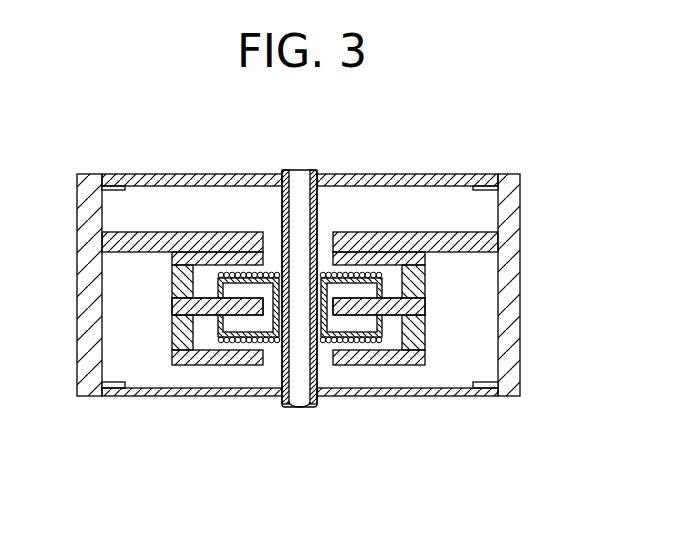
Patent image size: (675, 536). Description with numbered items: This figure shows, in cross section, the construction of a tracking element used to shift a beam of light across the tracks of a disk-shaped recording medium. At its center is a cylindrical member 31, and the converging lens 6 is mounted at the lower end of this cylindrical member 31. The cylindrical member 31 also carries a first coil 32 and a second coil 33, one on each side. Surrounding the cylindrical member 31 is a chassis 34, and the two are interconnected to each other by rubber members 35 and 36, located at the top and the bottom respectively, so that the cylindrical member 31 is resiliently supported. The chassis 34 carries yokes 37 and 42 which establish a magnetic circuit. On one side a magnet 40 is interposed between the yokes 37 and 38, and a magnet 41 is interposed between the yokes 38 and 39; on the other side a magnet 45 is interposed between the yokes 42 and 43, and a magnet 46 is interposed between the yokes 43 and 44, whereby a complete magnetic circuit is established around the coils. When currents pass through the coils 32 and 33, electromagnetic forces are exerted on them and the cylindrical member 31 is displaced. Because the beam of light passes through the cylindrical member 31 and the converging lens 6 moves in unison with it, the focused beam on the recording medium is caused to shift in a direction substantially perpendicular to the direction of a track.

The converging lens 6 is at (300, 408).
The cylindrical member 31 is at (298, 170).
The first coil 32 is at (327, 343).
The second coil 33 is at (272, 343).
The chassis 34 is at (512, 210).
The rubber member 35 is at (378, 174).
The rubber member 36 is at (445, 396).
The yoke 37 is at (425, 255).
The yoke 38 is at (425, 307).
The yoke 39 is at (425, 355).
The magnet 40 is at (425, 283).
The magnet 41 is at (425, 333).
The yoke 42 is at (172, 258).
The yoke 43 is at (172, 307).
The yoke 44 is at (172, 357).
The magnet 45 is at (172, 283).
The magnet 46 is at (172, 333).